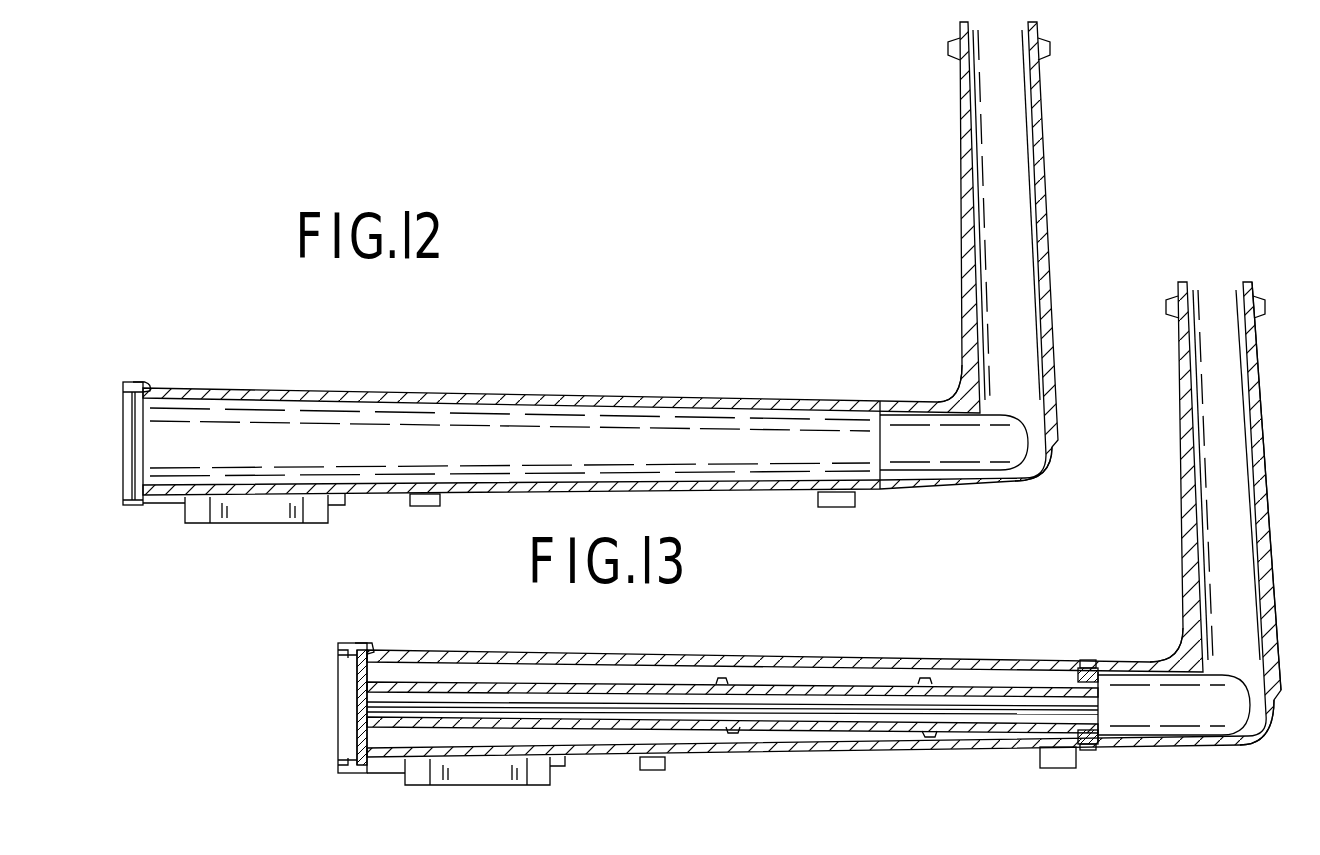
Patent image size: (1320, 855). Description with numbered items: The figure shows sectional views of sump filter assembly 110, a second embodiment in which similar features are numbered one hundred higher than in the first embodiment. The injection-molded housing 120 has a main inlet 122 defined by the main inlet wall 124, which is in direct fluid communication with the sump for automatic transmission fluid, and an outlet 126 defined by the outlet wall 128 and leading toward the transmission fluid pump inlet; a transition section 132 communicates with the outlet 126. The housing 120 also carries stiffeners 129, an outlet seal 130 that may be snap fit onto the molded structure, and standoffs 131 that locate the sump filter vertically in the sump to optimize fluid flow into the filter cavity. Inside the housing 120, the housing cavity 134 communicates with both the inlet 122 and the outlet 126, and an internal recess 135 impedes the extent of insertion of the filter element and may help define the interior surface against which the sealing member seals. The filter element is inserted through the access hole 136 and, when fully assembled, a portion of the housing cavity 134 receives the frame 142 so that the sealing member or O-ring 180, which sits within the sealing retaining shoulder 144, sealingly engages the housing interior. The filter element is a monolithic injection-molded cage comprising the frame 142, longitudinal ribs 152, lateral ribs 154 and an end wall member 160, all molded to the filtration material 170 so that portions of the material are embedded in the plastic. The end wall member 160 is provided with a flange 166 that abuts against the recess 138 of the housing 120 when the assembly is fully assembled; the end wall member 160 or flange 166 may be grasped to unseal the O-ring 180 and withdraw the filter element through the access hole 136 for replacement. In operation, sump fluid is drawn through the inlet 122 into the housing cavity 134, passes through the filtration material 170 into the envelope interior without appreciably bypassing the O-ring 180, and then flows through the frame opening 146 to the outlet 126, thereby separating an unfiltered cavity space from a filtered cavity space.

In FIG. 13, the sump filter assembly 110 is at (700, 646).
In FIG. 13, the housing 120 is at (490, 652).
In FIG. 12, the inlet 122 is at (295, 520).
In FIG. 13, the inlet 122 is at (520, 785).
In FIG. 12, the main inlet wall 124 is at (190, 522).
In FIG. 13, the main inlet wall 124 is at (415, 785).
In FIG. 12, the outlet 126 is at (1000, 32).
In FIG. 13, the outlet 126 is at (1215, 292).
In FIG. 12, the outlet wall 128 is at (1045, 160).
In FIG. 13, the outlet wall 128 is at (1252, 378).
In FIG. 12, the stiffeners 129 is at (960, 330).
In FIG. 13, the stiffeners 129 is at (1180, 600).
In FIG. 12, the outlet seal 130 is at (1050, 38).
In FIG. 13, the outlet seal 130 is at (1262, 298).
In FIG. 12, the standoffs 131 is at (438, 506).
In FIG. 13, the standoffs 131 is at (660, 770).
In FIG. 12, the transition section 132 is at (955, 455).
In FIG. 13, the transition section 132 is at (1190, 715).
In FIG. 13, the housing cavity 134 is at (782, 678).
In FIG. 12, the internal recess 135 is at (880, 410).
In FIG. 12, the access hole 136 is at (132, 440).
In FIG. 12, the recess 138 is at (127, 390).
In FIG. 13, the recess 138 is at (365, 645).
In FIG. 13, the frame 142 is at (1090, 683).
In FIG. 13, the sealing retaining shoulder 144 is at (1090, 750).
In FIG. 13, the frame opening 146 is at (1098, 704).
In FIG. 13, the longitudinal ribs 152 is at (862, 724).
In FIG. 13, the lateral ribs 154 is at (727, 733).
In FIG. 13, the end wall member 160 is at (345, 688).
In FIG. 13, the flange 166 is at (345, 652).
In FIG. 13, the filtration material 170 is at (797, 712).
In FIG. 13, the sealing member or O-ring 180 is at (1085, 666).